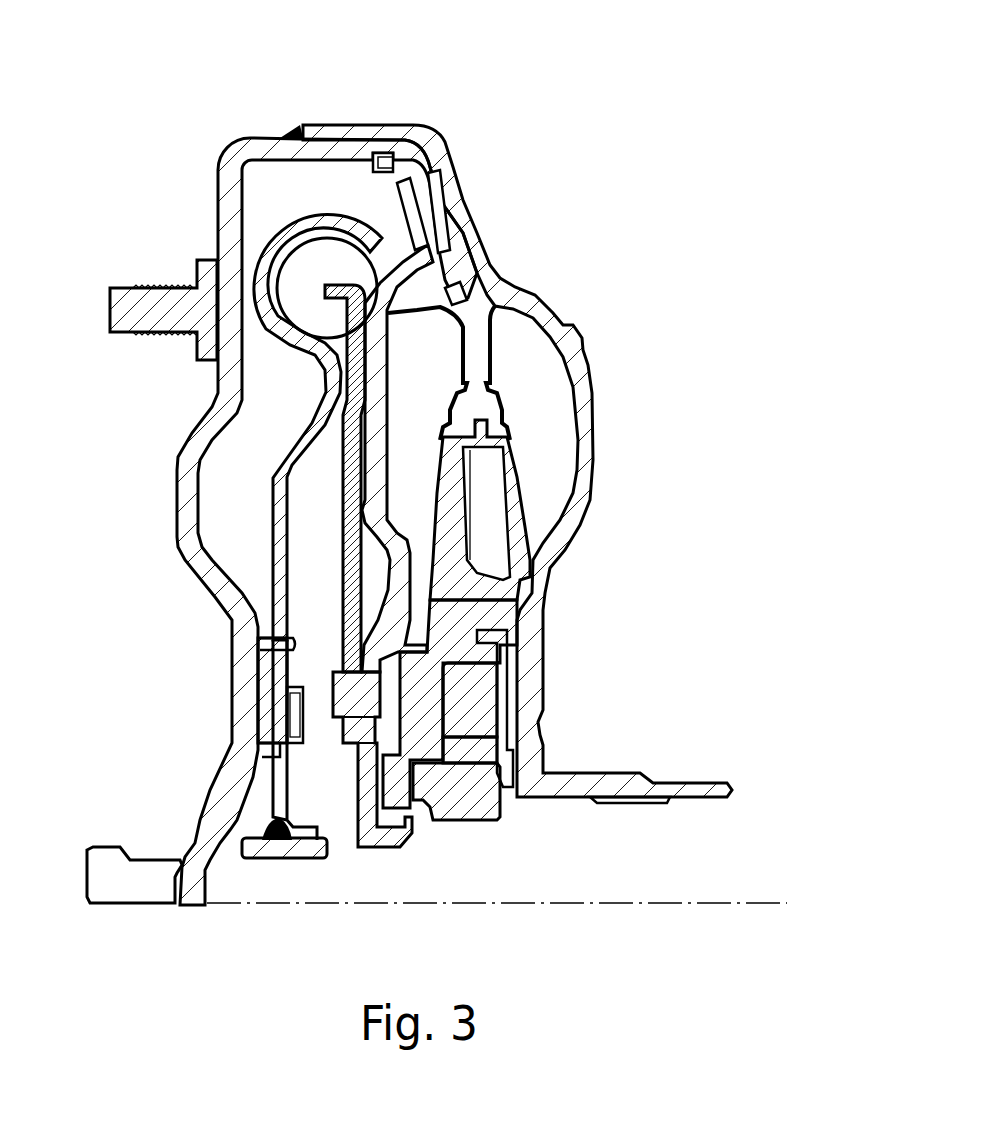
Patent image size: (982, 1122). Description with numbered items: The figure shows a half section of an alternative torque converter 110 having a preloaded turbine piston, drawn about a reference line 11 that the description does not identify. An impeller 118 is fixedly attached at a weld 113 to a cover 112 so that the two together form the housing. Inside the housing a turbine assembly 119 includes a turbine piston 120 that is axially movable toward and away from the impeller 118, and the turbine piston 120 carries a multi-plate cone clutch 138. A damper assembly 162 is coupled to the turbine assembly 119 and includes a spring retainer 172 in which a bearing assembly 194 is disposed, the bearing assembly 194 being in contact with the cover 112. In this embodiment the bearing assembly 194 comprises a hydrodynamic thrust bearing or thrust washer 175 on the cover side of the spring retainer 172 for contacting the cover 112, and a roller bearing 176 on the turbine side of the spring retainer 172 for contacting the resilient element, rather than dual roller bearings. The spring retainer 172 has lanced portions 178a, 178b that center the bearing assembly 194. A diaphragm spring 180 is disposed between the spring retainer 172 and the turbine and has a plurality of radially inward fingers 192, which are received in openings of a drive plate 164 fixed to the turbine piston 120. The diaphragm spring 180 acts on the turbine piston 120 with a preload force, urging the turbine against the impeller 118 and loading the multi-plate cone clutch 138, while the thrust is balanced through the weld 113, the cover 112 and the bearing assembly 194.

The axis of rotation 11 is at (765, 903).
The torque converter 110 is at (617, 158).
The cover 112 is at (177, 488).
The weld 113 is at (292, 125).
The impeller 118 is at (613, 452).
The turbine assembly 119 is at (381, 297).
The turbine piston 120 is at (382, 297).
The multi-plate cone clutch 138 is at (484, 304).
The damper assembly 162 is at (254, 209).
The drive plate 164 is at (342, 467).
The spring retainer 172 is at (290, 352).
The thrust washer 175 is at (258, 730).
The roller bearing 176 is at (330, 745).
The lanced portion 178a is at (257, 623).
The lanced portion 178b is at (270, 770).
The diaphragm spring 180 is at (342, 598).
The radially inward fingers 192 is at (305, 735).
The bearing assembly 194 is at (251, 757).